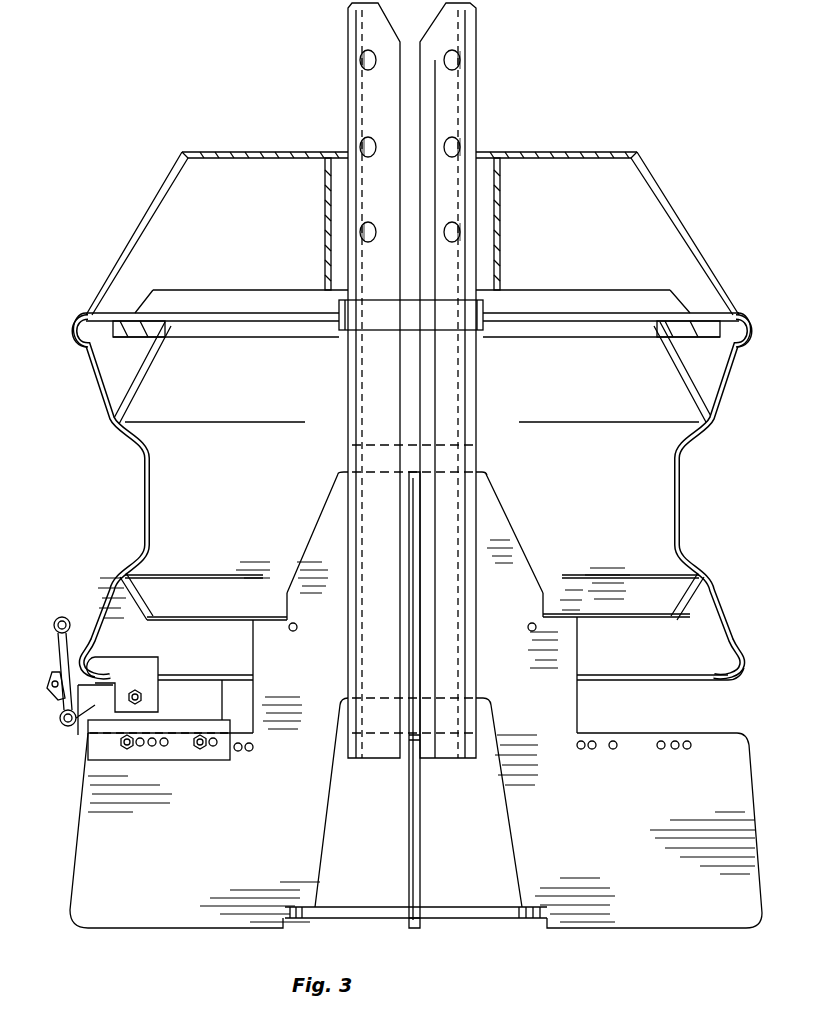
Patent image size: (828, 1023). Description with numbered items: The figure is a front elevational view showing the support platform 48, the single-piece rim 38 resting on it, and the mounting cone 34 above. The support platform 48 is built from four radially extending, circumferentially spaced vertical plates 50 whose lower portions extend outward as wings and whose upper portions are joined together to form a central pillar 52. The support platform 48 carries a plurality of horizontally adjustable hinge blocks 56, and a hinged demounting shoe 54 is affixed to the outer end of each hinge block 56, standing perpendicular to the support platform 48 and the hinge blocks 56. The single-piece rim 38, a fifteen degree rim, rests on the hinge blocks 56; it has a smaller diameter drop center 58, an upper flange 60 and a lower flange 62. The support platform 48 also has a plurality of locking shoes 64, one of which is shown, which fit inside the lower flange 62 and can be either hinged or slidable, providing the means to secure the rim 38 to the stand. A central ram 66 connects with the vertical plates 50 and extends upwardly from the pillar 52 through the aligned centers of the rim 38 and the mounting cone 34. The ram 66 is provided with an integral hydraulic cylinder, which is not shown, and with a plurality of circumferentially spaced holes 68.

The mounting cone 34 is at (128, 195).
The single-piece rim 38 is at (128, 505).
The support platform 48 is at (572, 818).
The vertical plates 50 is at (158, 877).
The central pillar 52 is at (568, 708).
The hinged demounting shoe 54 is at (58, 677).
The horizontally adjustable hinge block 56 is at (66, 728).
The drop center 58 is at (145, 478).
The upper flange 60 is at (78, 341).
The lower flange 62 is at (740, 678).
The locking shoe 64 is at (158, 663).
The central ram 66 is at (380, 95).
The circumferentially spaced holes 68 is at (462, 65).